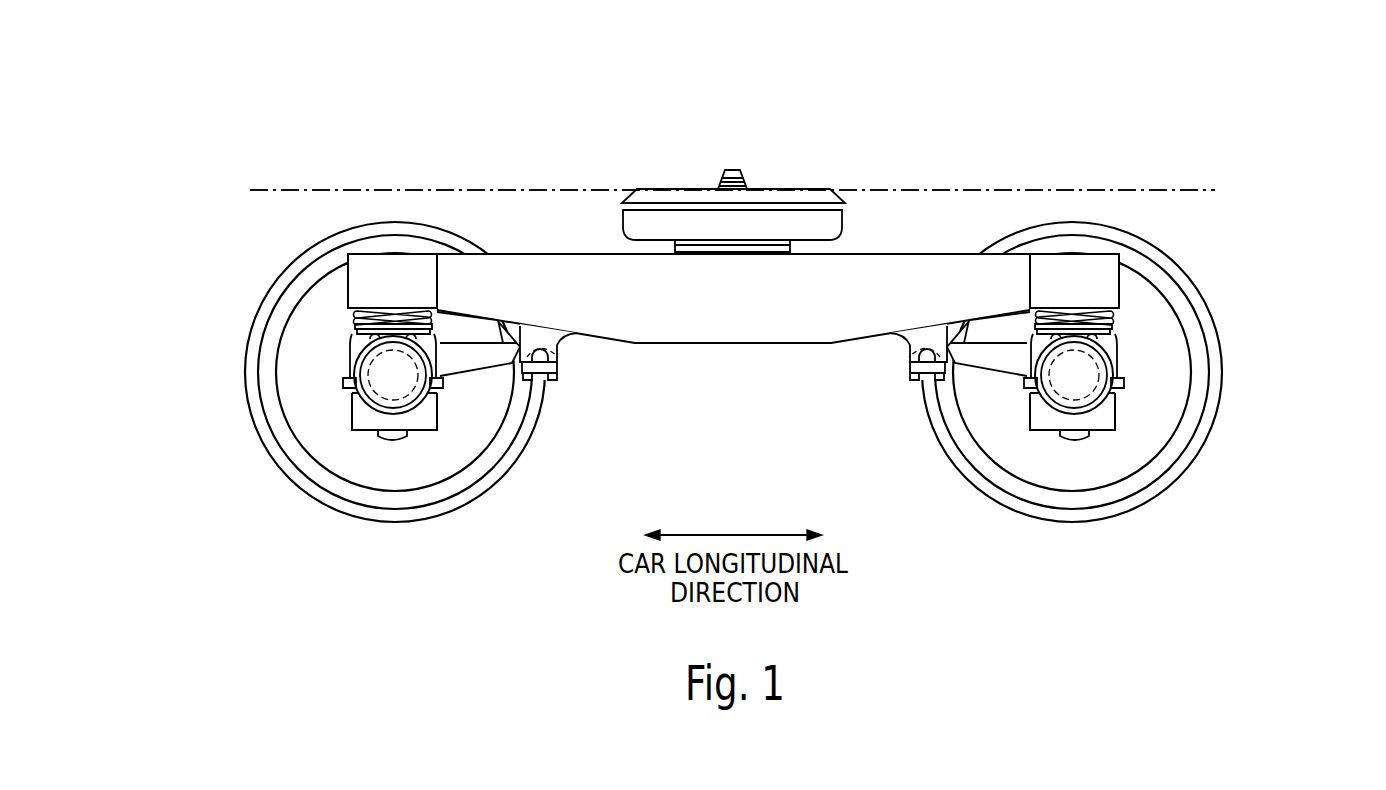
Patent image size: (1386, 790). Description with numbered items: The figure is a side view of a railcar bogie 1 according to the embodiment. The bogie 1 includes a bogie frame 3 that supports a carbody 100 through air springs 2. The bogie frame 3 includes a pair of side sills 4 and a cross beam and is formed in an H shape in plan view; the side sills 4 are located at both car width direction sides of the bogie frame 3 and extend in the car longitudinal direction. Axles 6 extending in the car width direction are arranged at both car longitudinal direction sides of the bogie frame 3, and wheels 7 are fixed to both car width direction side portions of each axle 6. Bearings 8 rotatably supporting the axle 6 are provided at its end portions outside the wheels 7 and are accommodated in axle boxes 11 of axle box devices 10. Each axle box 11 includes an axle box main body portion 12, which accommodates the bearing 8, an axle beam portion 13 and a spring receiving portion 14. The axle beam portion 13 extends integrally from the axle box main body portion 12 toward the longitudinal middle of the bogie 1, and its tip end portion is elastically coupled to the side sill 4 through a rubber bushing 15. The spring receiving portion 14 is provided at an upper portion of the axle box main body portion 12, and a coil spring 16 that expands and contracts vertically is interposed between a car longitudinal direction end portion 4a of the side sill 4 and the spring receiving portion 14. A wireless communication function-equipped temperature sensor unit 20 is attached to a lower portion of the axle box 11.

The railcar bogie 1 is at (326, 143).
The air spring 2 is at (812, 193).
The bogie frame 3 is at (737, 345).
The side sill 4 is at (807, 334).
The car longitudinal direction end portion of the side sill 4a is at (397, 254).
The axle 6 is at (345, 405).
The wheel 7 is at (292, 265).
The bearing 8 is at (430, 420).
The axle box device 10 is at (318, 386).
The axle box 11 is at (349, 390).
The axle box main body portion 12 is at (350, 365).
The axle beam portion 13 is at (477, 370).
The spring receiving portion 14 is at (354, 323).
The rubber bushing 15 is at (577, 340).
The coil spring 16 is at (352, 318).
The wireless communication function-equipped temperature sensor unit 20 is at (392, 441).
The carbody 100 is at (1176, 186).